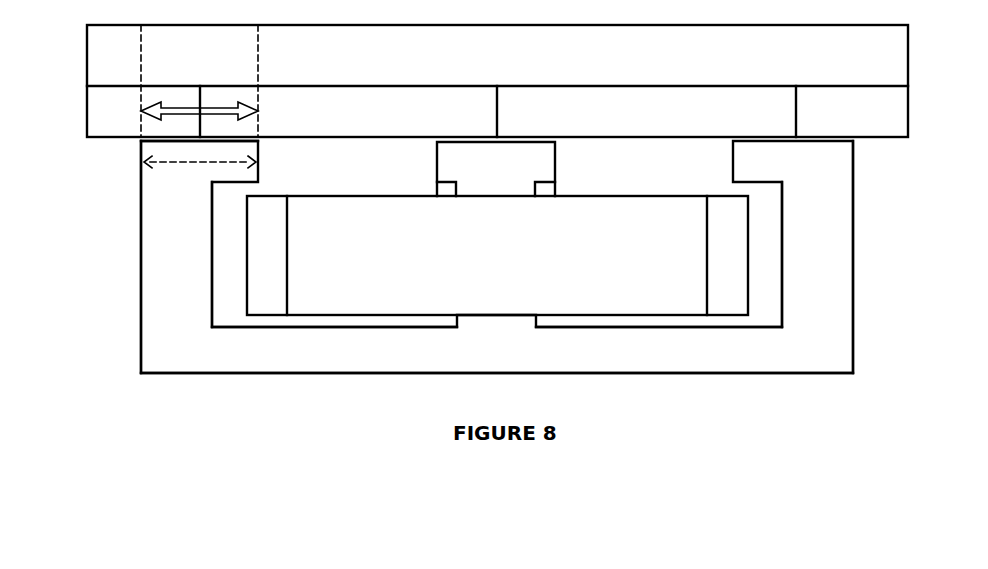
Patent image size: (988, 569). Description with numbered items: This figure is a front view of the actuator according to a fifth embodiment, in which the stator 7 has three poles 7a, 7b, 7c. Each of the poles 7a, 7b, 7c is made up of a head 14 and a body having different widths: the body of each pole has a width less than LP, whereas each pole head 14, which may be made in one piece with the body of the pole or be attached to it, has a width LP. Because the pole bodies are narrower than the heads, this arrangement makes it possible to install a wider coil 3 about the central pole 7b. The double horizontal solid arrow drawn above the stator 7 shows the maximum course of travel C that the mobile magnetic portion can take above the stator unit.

The coil 3 is at (625, 278).
The stator 7 is at (193, 333).
The pole 7a is at (184, 242).
The central pole 7b is at (482, 333).
The pole 7c is at (798, 244).
The pole head 14 is at (144, 153).
The maximum course of travel C is at (497, 81).
The pole head width LP is at (200, 171).